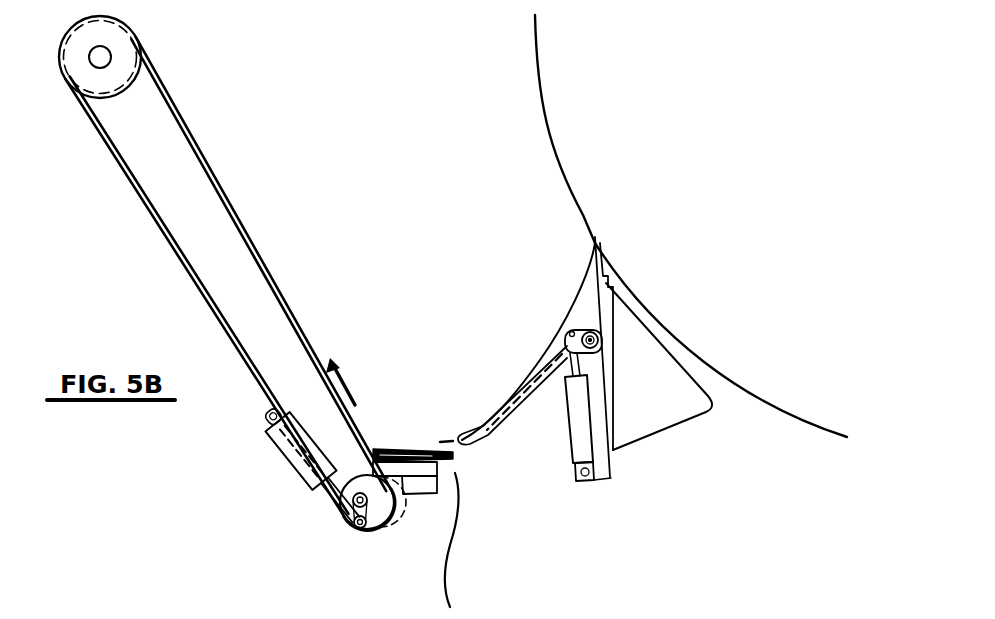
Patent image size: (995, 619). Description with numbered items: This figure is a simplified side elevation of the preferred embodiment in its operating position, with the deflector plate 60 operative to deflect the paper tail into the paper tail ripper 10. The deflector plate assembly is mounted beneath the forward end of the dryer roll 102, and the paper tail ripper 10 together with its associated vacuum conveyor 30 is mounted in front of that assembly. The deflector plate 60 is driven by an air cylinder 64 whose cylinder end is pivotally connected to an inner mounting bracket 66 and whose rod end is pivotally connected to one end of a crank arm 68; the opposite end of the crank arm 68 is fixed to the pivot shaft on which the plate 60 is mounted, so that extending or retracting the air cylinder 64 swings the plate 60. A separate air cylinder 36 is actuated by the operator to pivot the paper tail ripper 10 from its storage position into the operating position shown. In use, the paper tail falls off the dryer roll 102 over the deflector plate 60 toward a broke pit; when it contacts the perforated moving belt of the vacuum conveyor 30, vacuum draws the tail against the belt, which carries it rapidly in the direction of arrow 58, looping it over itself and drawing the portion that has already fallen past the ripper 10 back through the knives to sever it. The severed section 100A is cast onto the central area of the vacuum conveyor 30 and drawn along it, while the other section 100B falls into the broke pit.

The paper tail ripper 10 is at (408, 444).
The vacuum conveyor 30 is at (289, 291).
The air cylinder 36 is at (278, 448).
The arrow 58 is at (345, 391).
The deflector plate 60 is at (478, 451).
The air cylinder 64 is at (580, 406).
The inner mounting bracket 66 is at (614, 461).
The crank arm 68 is at (582, 328).
The severed section of the tail 100A is at (581, 276).
The other section of the severed tail 100B is at (450, 553).
The dryer roll 102 is at (541, 108).